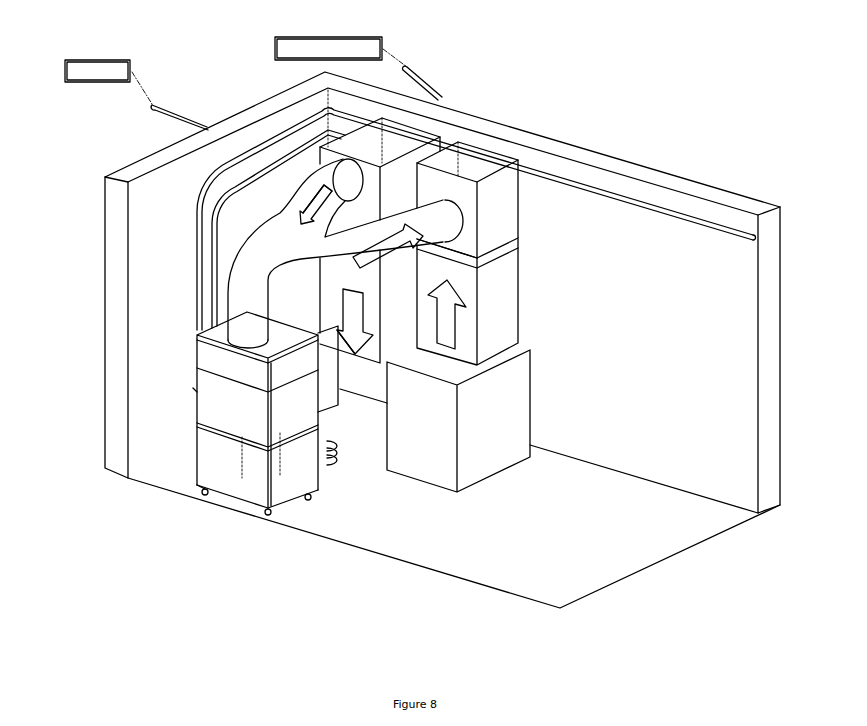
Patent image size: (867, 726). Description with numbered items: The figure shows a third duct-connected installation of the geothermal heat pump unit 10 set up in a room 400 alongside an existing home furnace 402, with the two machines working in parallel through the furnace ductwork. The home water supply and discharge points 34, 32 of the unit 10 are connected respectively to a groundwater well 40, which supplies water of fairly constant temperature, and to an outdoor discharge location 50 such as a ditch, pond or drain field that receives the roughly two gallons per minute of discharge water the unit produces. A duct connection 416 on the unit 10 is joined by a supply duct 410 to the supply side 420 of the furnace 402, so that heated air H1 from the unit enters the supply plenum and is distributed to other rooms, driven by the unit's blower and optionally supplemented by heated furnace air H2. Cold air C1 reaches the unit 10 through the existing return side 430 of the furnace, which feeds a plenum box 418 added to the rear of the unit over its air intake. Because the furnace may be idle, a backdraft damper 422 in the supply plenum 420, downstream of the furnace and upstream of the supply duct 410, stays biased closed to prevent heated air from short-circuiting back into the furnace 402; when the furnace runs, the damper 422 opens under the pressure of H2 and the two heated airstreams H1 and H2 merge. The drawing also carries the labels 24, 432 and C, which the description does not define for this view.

The geothermal heat pump unit 10 is at (193, 487).
The side panel / hose 24 is at (328, 393).
The home water discharge point 32 is at (118, 455).
The home water supply point 34 is at (193, 390).
The groundwater well 40 is at (65, 62).
The outdoor discharge location 50 is at (272, 40).
The room 400 is at (733, 300).
The furnace 402 is at (430, 430).
The supply duct 410 is at (189, 342).
The duct connection 416 is at (225, 343).
The plenum box 418 is at (313, 427).
The supply side 420 is at (490, 148).
The backdraft damper 422 is at (498, 243).
The return side 430 is at (412, 127).
The flexible duct assembly 432 is at (302, 195).
The clearance C is at (357, 353).
The cold air C1 is at (320, 185).
The heated air from unit H1 is at (477, 255).
The heated furnace air H2 is at (458, 283).